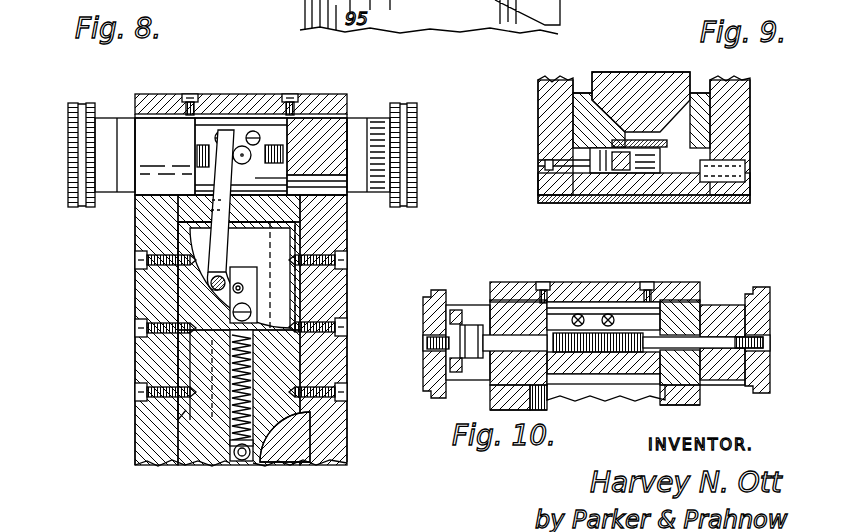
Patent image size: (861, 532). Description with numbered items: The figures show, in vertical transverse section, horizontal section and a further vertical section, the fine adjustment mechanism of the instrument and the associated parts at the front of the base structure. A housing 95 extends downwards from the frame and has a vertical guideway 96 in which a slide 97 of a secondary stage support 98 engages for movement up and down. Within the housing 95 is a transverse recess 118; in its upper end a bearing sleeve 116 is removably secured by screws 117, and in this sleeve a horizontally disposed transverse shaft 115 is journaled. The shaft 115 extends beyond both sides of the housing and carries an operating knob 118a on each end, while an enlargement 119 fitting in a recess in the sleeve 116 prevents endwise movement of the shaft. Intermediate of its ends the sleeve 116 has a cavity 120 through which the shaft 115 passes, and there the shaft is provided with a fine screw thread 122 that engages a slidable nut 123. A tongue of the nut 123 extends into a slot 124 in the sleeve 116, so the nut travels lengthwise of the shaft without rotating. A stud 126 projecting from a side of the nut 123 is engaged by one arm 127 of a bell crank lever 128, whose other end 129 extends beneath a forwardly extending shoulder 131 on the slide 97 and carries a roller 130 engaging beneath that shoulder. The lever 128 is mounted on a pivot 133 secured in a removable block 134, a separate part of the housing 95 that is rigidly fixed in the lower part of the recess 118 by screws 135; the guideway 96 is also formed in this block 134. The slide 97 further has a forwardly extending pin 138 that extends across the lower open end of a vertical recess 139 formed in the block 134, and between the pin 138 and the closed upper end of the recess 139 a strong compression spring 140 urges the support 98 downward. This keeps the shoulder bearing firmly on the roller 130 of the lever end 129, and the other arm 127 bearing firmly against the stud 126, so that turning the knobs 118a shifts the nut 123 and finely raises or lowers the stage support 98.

In FIG. 8, the housing 95 is at (138, 243).
In FIG. 9, the housing 95 is at (545, 149).
In FIG. 10, the housing 95 is at (692, 404).
In FIG. 8, the vertical guideway 96 is at (290, 246).
In FIG. 9, the vertical guideway 96 is at (712, 110).
In FIG. 8, the slide 97 is at (322, 217).
In FIG. 9, the slide 97 is at (686, 95).
In FIG. 8, the secondary stage support 98 is at (168, 212).
In FIG. 8, the transverse shaft 115 is at (284, 155).
In FIG. 10, the transverse shaft 115 is at (700, 340).
In FIG. 8, the bearing sleeve 116 is at (151, 117).
In FIG. 10, the bearing sleeve 116 is at (727, 358).
In FIG. 8, the screws 117 is at (195, 94).
In FIG. 10, the screws 117 is at (553, 272).
In FIG. 8, the transverse recess 118 is at (332, 113).
In FIG. 9, the transverse recess 118 is at (588, 197).
In FIG. 10, the transverse recess 118 is at (676, 400).
In FIG. 8, the operating knob 118a is at (68, 104).
In FIG. 10, the operating knob 118a is at (425, 292).
In FIG. 10, the enlargement 119 is at (467, 330).
In FIG. 8, the cavity 120 is at (255, 178).
In FIG. 10, the cavity 120 is at (654, 322).
In FIG. 8, the fine screw thread 122 is at (275, 145).
In FIG. 10, the fine screw thread 122 is at (587, 330).
In FIG. 8, the slidable nut 123 is at (283, 168).
In FIG. 10, the slidable nut 123 is at (597, 376).
In FIG. 10, the slot 124 is at (633, 385).
In FIG. 8, the stud 126 is at (243, 150).
In FIG. 8, the lever arm 127 is at (218, 143).
In FIG. 9, the lever arm 127 is at (552, 168).
In FIG. 10, the lever arm 127 is at (518, 355).
In FIG. 8, the bell crank lever 128 is at (222, 214).
In FIG. 8, the lever end 129 is at (241, 270).
In FIG. 9, the lever end 129 is at (735, 180).
In FIG. 8, the roller 130 is at (292, 303).
In FIG. 8, the shoulder 131 is at (262, 284).
In FIG. 9, the shoulder 131 is at (670, 140).
In FIG. 8, the pivot 133 is at (212, 284).
In FIG. 9, the pivot 133 is at (632, 165).
In FIG. 8, the removable block 134 is at (292, 420).
In FIG. 9, the removable block 134 is at (587, 120).
In FIG. 8, the screws 135 is at (136, 392).
In FIG. 8, the pin 138 is at (241, 455).
In FIG. 8, the vertical recess 139 is at (230, 368).
In FIG. 8, the compression spring 140 is at (227, 350).